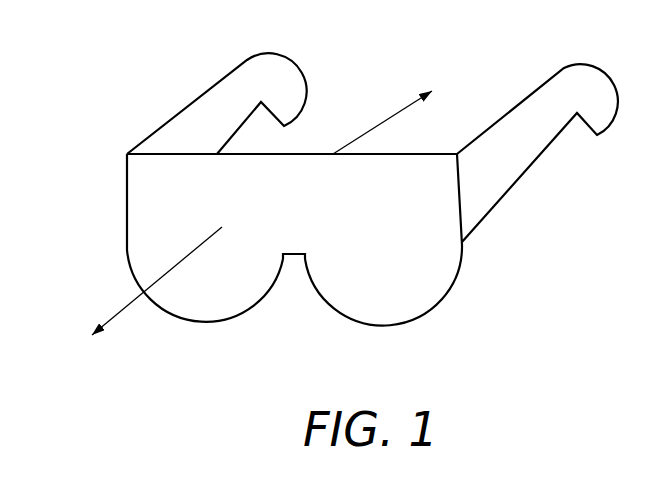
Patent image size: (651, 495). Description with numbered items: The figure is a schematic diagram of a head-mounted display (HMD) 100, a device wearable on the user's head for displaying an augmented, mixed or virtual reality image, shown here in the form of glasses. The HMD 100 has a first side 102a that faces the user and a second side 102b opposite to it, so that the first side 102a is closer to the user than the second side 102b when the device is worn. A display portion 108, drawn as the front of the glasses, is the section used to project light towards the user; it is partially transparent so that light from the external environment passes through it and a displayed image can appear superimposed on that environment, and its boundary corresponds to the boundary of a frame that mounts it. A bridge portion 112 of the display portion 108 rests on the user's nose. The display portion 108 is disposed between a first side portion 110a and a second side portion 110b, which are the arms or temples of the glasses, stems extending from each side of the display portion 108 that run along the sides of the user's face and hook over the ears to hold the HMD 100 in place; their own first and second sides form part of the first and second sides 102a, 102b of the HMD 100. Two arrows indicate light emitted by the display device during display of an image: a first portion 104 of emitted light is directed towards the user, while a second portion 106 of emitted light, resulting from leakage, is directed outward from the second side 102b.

The head-mounted display (HMD) 100 is at (130, 54).
The first side 102a is at (376, 54).
The second side 102b is at (265, 321).
The first portion of emitted light 104 is at (398, 112).
The second portion of emitted light 106 is at (122, 308).
The display portion 108 is at (315, 215).
The first side portion 110a is at (228, 135).
The second side portion 110b is at (525, 167).
The bridge portion 112 is at (293, 254).